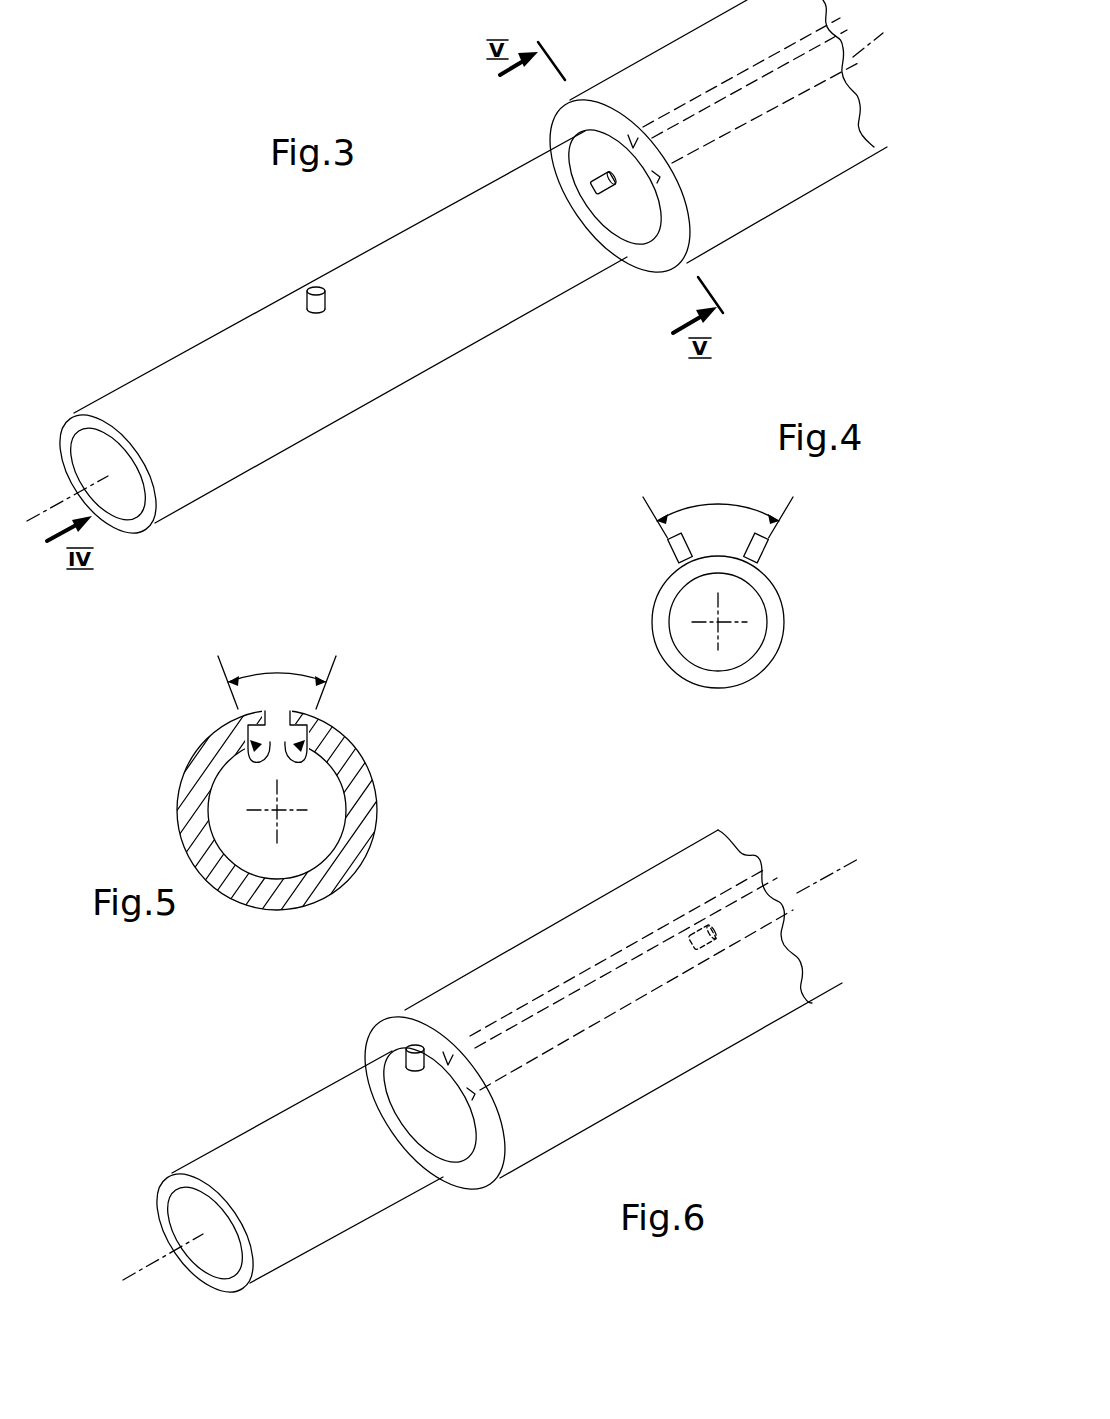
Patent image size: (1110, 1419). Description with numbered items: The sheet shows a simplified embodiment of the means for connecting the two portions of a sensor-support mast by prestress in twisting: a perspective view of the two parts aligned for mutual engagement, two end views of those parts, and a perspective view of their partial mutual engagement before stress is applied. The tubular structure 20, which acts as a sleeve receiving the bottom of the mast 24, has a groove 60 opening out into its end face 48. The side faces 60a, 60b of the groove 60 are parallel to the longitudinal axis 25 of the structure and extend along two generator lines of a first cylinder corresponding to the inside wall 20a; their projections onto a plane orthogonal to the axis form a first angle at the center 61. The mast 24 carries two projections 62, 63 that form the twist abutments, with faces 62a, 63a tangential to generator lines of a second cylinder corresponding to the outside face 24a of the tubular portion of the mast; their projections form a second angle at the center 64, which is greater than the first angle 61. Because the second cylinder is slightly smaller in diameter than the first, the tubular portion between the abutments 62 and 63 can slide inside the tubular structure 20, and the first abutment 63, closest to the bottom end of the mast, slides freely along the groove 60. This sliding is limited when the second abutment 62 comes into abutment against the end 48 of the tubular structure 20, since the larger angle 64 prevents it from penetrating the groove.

In FIG. 3, the tubular structure 20 is at (833, 163).
In FIG. 5, the tubular structure 20 is at (365, 805).
In FIG. 6, the tubular structure 20 is at (723, 1037).
In FIG. 5, the inside wall 20a is at (325, 873).
In FIG. 3, the mast 24 is at (346, 400).
In FIG. 4, the mast 24 is at (663, 638).
In FIG. 6, the mast 24 is at (305, 1235).
In FIG. 4, the outside face 24a is at (644, 606).
In FIG. 3, the longitudinal axis 25 is at (38, 508).
In FIG. 4, the longitudinal axis 25 is at (717, 623).
In FIG. 5, the longitudinal axis 25 is at (277, 812).
In FIG. 6, the longitudinal axis 25 is at (133, 1278).
In FIG. 3, the end face 48 is at (653, 260).
In FIG. 6, the end face 48 is at (435, 1103).
In FIG. 5, the groove 60 is at (285, 733).
In FIG. 3, the side face 60a is at (703, 91).
In FIG. 5, the side face 60a is at (248, 742).
In FIG. 6, the side face 60a is at (560, 983).
In FIG. 3, the side face 60b is at (773, 107).
In FIG. 5, the side face 60b is at (309, 750).
In FIG. 6, the side face 60b is at (613, 1010).
In FIG. 5, the first angle at the center 61 is at (265, 672).
In FIG. 3, the second twist abutment 62 is at (328, 301).
In FIG. 4, the second twist abutment 62 is at (673, 552).
In FIG. 6, the second twist abutment 62 is at (403, 1060).
In FIG. 4, the face 62a is at (671, 567).
In FIG. 3, the first twist abutment 63 is at (593, 185).
In FIG. 4, the first twist abutment 63 is at (764, 553).
In FIG. 6, the first twist abutment 63 is at (707, 948).
In FIG. 4, the face 63a is at (762, 562).
In FIG. 4, the second angle at the center 64 is at (708, 503).